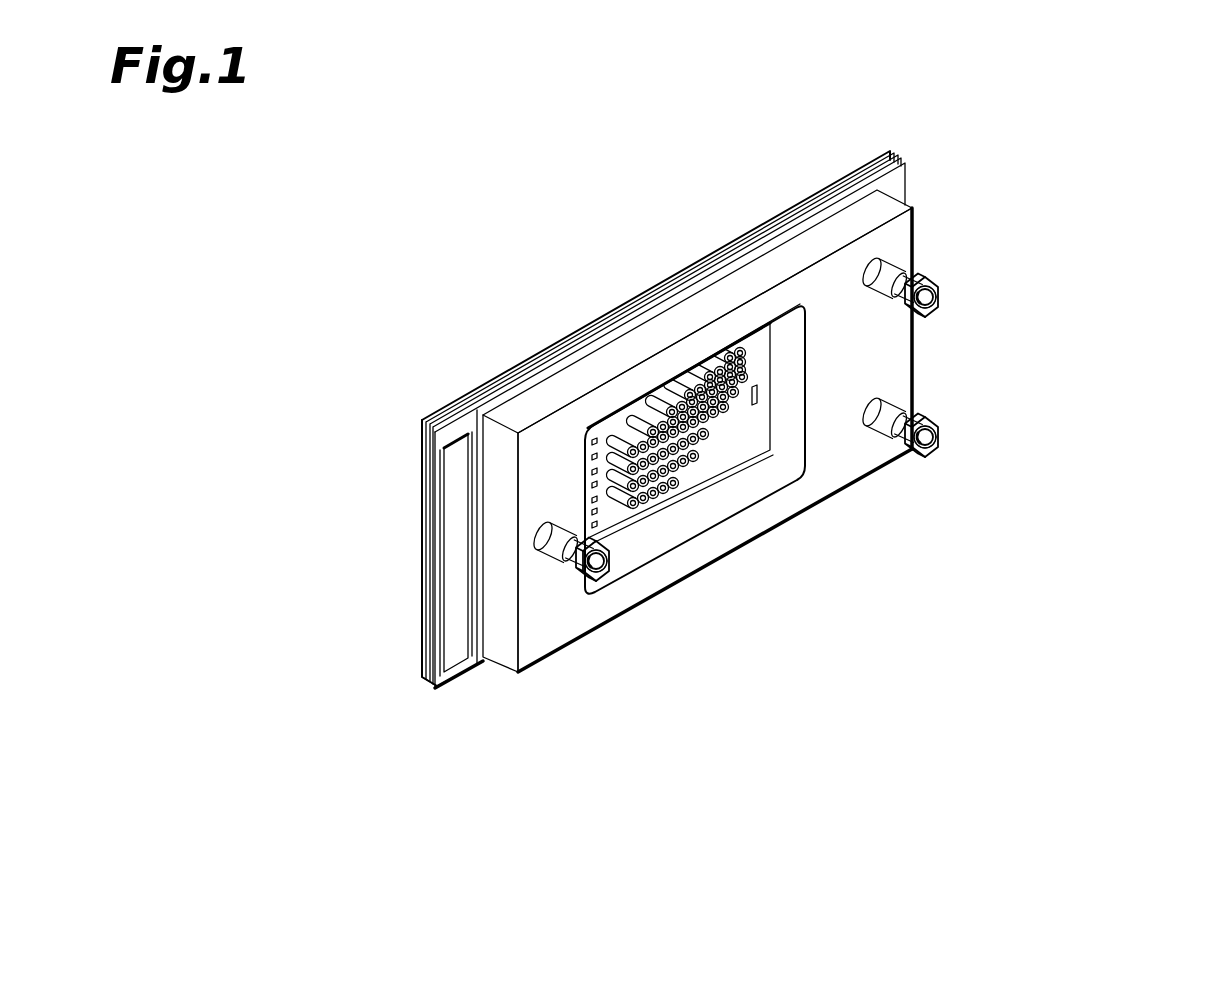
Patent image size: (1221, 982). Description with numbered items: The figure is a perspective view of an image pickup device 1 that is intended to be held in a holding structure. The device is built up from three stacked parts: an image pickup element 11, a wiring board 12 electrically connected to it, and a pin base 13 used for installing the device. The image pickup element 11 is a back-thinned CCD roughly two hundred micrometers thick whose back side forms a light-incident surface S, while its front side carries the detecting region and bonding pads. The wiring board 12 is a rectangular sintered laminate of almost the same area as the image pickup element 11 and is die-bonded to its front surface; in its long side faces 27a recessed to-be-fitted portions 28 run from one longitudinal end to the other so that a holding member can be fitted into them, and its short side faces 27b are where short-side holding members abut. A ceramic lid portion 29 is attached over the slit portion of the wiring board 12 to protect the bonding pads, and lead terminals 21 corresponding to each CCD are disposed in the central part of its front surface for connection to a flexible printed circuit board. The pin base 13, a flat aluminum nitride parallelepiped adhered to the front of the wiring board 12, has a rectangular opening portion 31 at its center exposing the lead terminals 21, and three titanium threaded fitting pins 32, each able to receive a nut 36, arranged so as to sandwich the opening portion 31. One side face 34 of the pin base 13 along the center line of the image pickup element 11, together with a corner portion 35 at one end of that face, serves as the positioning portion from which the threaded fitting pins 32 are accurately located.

The image pickup device 1 is at (1114, 191).
The image pickup element 11 is at (518, 368).
The wiring board 12 is at (910, 189).
The pin base 13 is at (808, 242).
The lead terminal 21 is at (677, 380).
The side face 27a is at (904, 154).
The side face 27b is at (914, 232).
The to-be-fitted portion 28 is at (678, 282).
The lid portion 29 is at (455, 600).
The opening portion 31 is at (790, 362).
The threaded fitting pin 32 is at (895, 270).
The side face 34 is at (677, 590).
The corner portion 35 is at (517, 676).
The nut 36 is at (942, 292).
The light-incident surface S is at (418, 534).